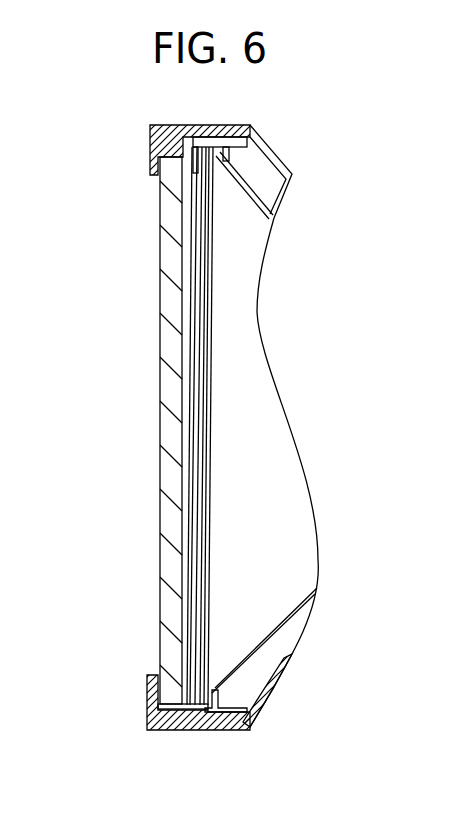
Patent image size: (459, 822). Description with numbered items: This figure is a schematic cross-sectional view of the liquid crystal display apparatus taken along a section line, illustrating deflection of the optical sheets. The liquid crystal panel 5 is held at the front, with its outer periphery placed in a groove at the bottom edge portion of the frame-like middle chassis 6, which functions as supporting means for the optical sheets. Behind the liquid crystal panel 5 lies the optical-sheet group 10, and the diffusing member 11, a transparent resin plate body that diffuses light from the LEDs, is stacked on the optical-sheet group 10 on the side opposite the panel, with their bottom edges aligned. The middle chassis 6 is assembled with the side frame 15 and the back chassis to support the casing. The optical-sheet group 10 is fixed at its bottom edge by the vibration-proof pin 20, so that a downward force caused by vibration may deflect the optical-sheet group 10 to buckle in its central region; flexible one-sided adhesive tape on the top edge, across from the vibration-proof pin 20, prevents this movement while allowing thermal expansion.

The liquid crystal panel 5 is at (159, 460).
The optical-sheet group 10 is at (193, 378).
The diffusing member 11 is at (210, 325).
The vibration-proof pin 20 is at (172, 712).
The middle chassis 6 is at (192, 718).
The side frame 15 is at (253, 730).